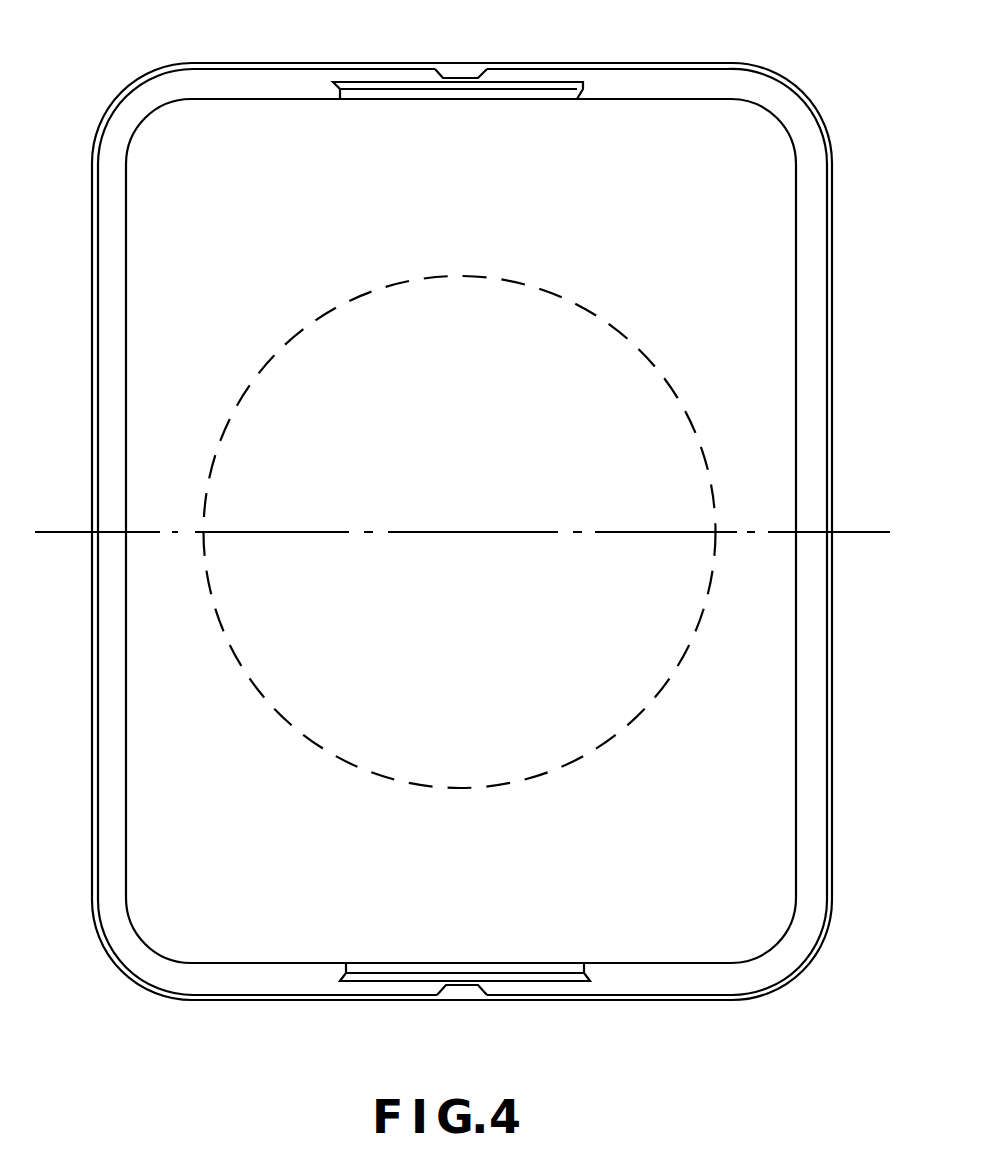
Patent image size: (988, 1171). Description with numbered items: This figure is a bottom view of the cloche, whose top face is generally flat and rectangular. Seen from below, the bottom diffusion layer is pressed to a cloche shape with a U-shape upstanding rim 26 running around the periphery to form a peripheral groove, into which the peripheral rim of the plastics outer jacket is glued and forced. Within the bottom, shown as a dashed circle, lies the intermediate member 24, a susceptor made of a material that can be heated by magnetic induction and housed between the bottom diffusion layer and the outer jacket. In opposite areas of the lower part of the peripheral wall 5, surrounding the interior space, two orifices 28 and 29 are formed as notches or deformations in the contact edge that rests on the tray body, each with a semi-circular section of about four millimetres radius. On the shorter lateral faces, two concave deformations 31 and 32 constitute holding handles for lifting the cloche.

The intermediate member 24 is at (214, 606).
The U-shape upstanding rim 26 is at (120, 309).
The orifice 28 is at (465, 73).
The orifice 29 is at (473, 988).
The concave deformation 31 is at (400, 975).
The concave deformation 32 is at (383, 90).
The peripheral wall 5 is at (880, 545).